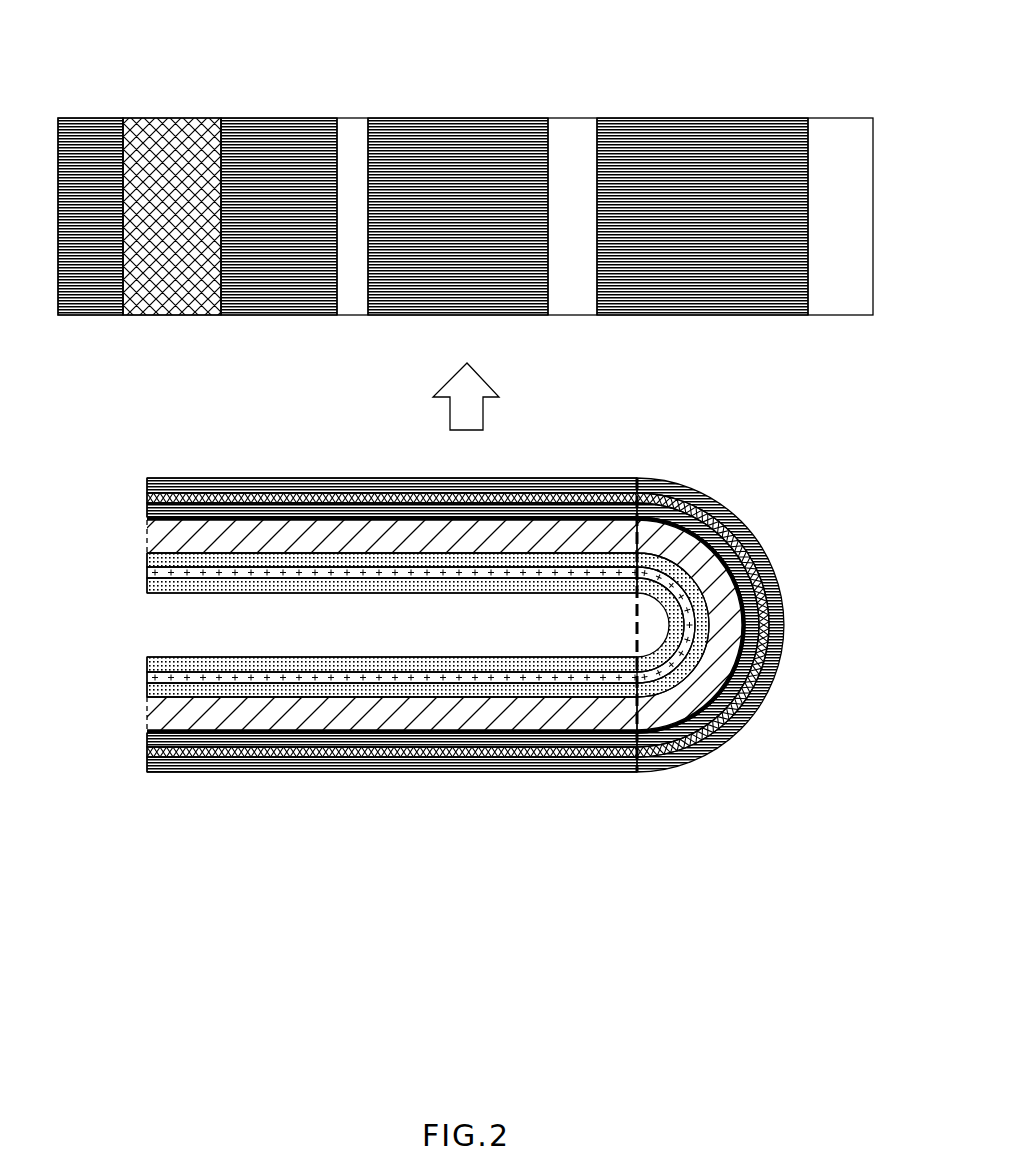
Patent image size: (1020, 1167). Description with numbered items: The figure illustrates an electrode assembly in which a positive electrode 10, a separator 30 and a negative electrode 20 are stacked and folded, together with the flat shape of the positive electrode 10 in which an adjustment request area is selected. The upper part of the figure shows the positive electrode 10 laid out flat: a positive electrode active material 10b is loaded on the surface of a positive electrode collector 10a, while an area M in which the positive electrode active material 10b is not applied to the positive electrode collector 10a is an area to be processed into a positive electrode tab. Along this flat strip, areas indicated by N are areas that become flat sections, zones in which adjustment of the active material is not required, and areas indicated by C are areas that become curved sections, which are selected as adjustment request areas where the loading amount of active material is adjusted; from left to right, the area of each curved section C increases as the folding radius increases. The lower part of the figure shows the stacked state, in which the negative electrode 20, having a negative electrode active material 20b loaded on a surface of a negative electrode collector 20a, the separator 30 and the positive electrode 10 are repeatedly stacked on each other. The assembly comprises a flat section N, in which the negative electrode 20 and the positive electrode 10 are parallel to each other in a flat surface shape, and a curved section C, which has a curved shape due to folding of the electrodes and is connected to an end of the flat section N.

The positive electrode 10 is at (459, 386).
The positive electrode collector 10a is at (172, 300).
The positive electrode active material 10b is at (268, 300).
The negative electrode 20 is at (377, 622).
The negative electrode collector 20a is at (152, 572).
The negative electrode active material 20b is at (155, 560).
The separator 30 is at (155, 712).
The area in which the positive electrode active material is not applied M is at (170, 215).
The flat section N is at (642, 132).
The curved section C is at (845, 305).